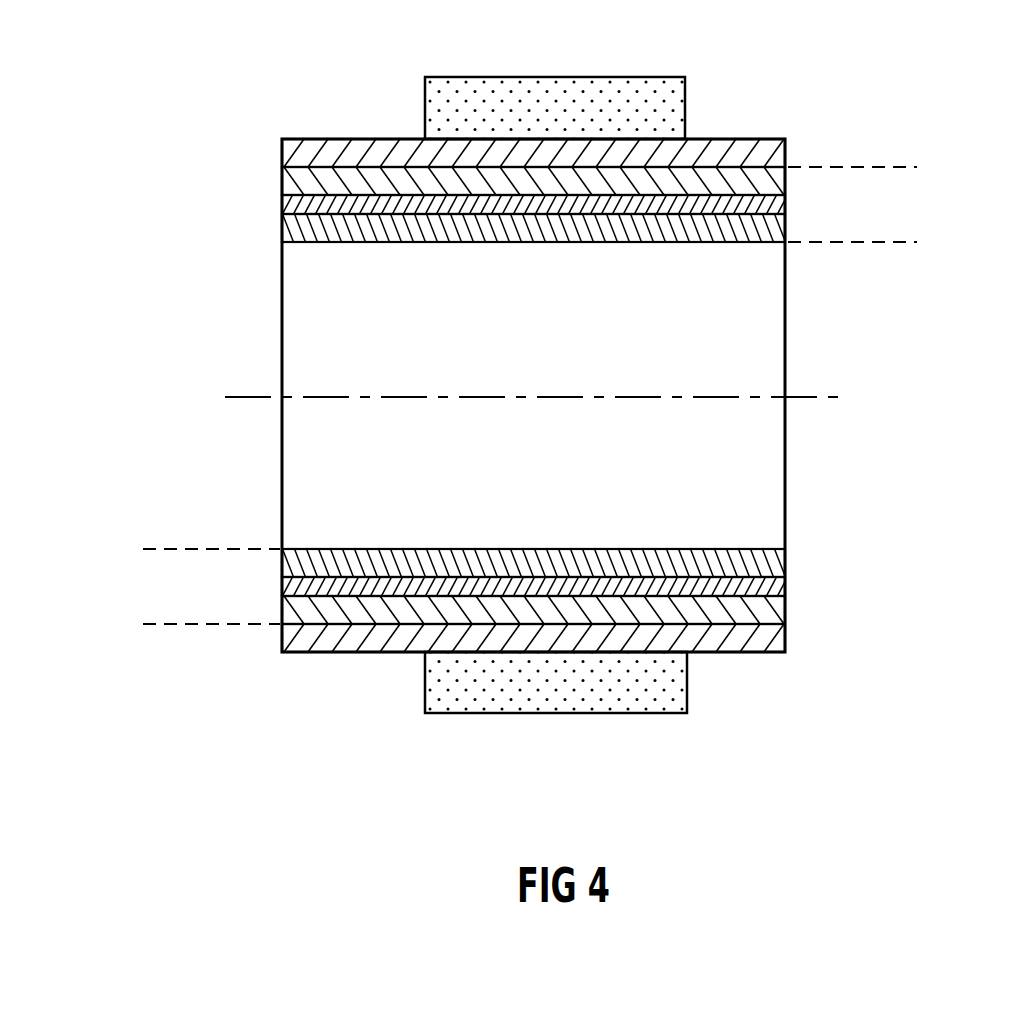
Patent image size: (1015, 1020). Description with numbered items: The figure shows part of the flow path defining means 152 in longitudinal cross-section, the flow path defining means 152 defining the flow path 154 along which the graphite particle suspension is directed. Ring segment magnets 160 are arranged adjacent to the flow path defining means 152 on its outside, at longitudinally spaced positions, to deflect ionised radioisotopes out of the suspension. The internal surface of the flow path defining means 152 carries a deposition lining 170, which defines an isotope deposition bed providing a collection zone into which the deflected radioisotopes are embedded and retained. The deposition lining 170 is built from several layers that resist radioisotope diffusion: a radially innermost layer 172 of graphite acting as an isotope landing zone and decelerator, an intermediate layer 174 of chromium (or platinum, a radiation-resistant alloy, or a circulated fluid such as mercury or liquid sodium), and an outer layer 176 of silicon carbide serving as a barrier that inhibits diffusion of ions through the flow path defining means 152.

The flow path defining means 152 is at (740, 157).
The flow path 154 is at (377, 351).
The ring segment magnets 160 is at (652, 84).
The deposition lining 170 is at (923, 167).
The radially innermost layer 172 is at (740, 230).
The intermediate layer 174 is at (280, 207).
The outer layer 176 is at (735, 177).